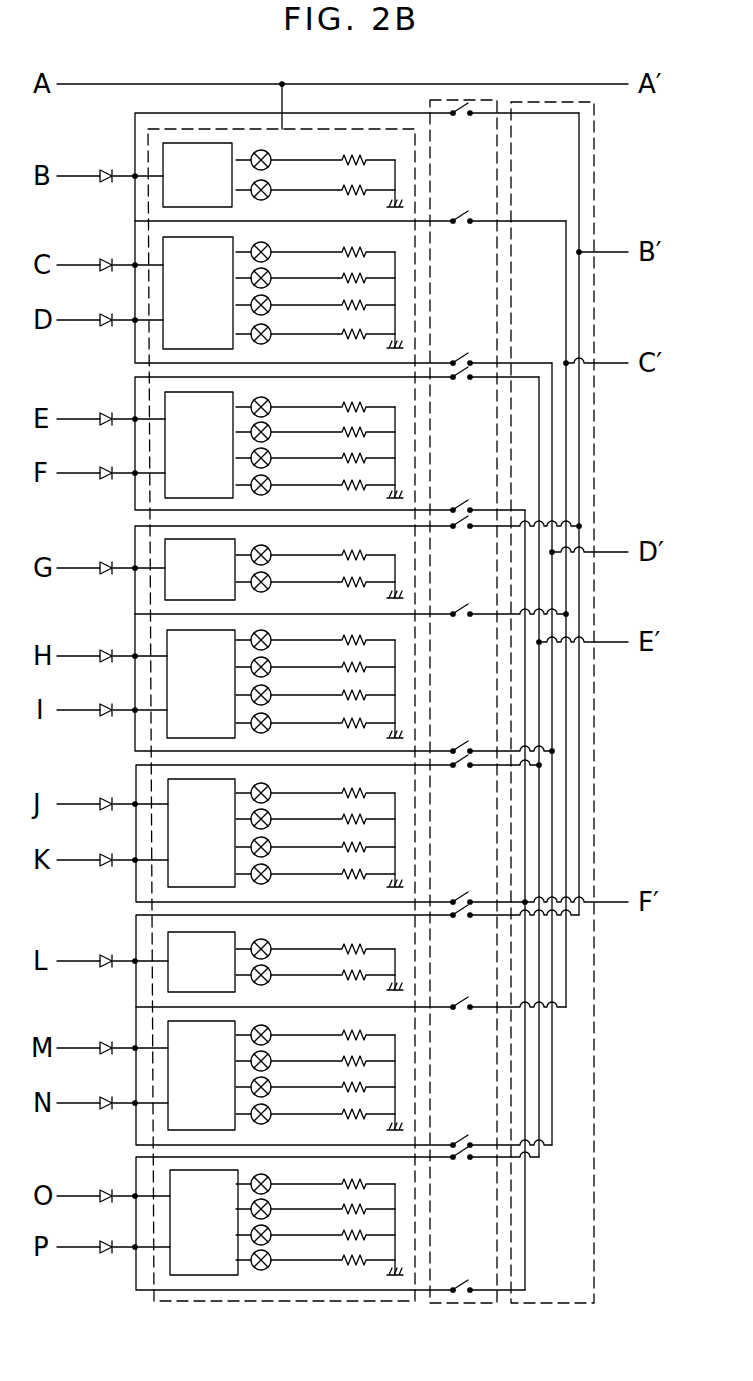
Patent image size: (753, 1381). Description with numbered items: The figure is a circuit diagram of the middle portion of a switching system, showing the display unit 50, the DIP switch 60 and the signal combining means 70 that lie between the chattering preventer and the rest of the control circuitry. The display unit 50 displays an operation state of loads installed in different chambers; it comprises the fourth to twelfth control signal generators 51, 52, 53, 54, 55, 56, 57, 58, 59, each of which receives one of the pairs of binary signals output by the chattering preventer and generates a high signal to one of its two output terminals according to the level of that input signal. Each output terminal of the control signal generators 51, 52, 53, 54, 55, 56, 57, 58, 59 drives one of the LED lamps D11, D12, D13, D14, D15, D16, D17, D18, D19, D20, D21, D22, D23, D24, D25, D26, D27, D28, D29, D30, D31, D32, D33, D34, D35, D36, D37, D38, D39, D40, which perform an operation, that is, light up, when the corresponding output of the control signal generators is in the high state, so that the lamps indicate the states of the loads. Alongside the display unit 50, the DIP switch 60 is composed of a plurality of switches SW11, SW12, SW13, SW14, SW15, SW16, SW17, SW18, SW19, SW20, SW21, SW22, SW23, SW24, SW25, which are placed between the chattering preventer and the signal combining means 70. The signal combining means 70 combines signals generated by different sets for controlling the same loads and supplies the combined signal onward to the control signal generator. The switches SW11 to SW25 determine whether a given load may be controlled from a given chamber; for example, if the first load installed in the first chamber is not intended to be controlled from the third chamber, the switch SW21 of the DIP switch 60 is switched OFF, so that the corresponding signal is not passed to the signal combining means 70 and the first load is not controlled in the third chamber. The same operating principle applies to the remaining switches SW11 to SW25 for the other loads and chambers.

The display unit 50 is at (327, 128).
The DIP switch 60 is at (430, 104).
The signal combining means 70 is at (595, 183).
The fourth control signal generator 51 is at (294, 167).
The fifth control signal generator 52 is at (294, 292).
The sixth control signal generator 53 is at (294, 443).
The seventh control signal generator 54 is at (294, 570).
The eighth control signal generator 55 is at (294, 682).
The ninth control signal generator 56 is at (294, 833).
The tenth control signal generator 57 is at (294, 961).
The eleventh control signal generator 58 is at (294, 1076).
The twelfth control signal generator 59 is at (294, 1223).
The LED lamp D11 is at (270, 151).
The LED lamp D12 is at (270, 243).
The LED lamp D13 is at (270, 296).
The LED lamp D14 is at (270, 398).
The LED lamp D15 is at (270, 449).
The LED lamp D16 is at (270, 546).
The LED lamp D17 is at (270, 631).
The LED lamp D18 is at (270, 686).
The LED lamp D19 is at (270, 784).
The LED lamp D20 is at (270, 838).
The LED lamp D21 is at (270, 940).
The LED lamp D22 is at (270, 1026).
The LED lamp D23 is at (270, 1078).
The LED lamp D24 is at (270, 1175).
The LED lamp D25 is at (270, 1226).
The LED lamp D26 is at (270, 181).
The LED lamp D27 is at (270, 269).
The LED lamp D28 is at (270, 325).
The LED lamp D29 is at (270, 423).
The LED lamp D30 is at (270, 476).
The LED lamp D31 is at (270, 573).
The LED lamp D32 is at (270, 658).
The LED lamp D33 is at (270, 714).
The LED lamp D34 is at (270, 810).
The LED lamp D35 is at (270, 865).
The LED lamp D36 is at (270, 966).
The LED lamp D37 is at (270, 1052).
The LED lamp D38 is at (270, 1105).
The LED lamp D39 is at (270, 1200).
The LED lamp D40 is at (270, 1251).
The switch SW11 is at (508, 127).
The switch SW12 is at (501, 202).
The switch SW13 is at (494, 346).
The switch SW14 is at (488, 392).
The switch SW15 is at (481, 495).
The switch SW16 is at (509, 540).
The switch SW17 is at (502, 629).
The switch SW18 is at (495, 733).
The switch SW19 is at (489, 782).
The switch SW20 is at (532, 884).
The switch SW21 is at (508, 935).
The switch SW22 is at (501, 1023).
The switch SW23 is at (494, 1127).
The switch SW24 is at (488, 1178).
The switch SW25 is at (481, 1273).